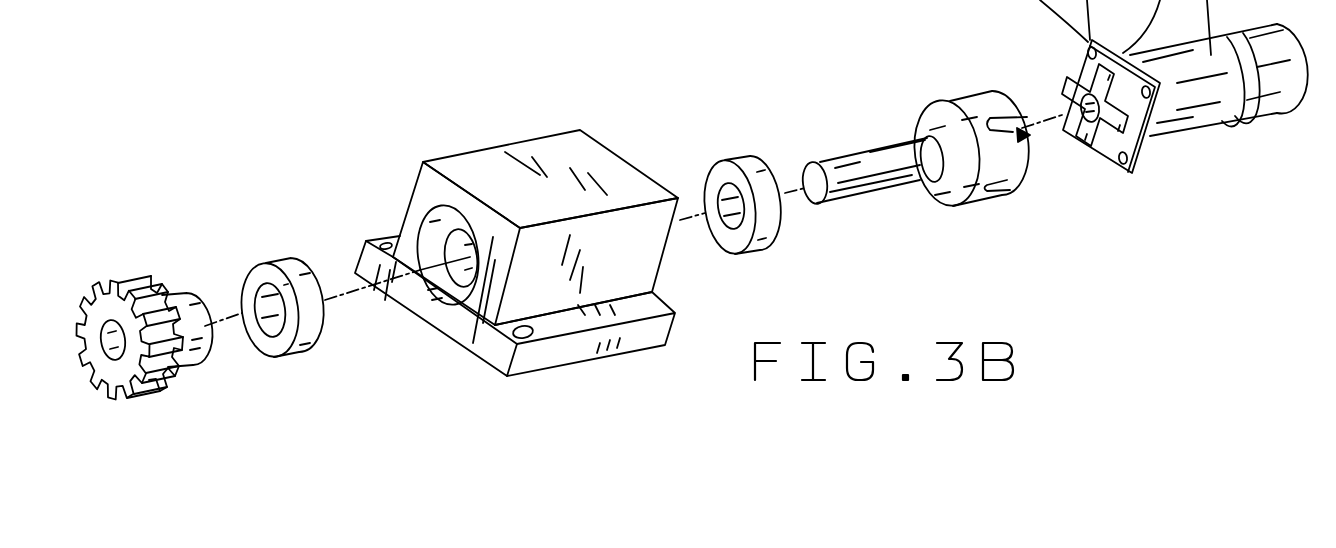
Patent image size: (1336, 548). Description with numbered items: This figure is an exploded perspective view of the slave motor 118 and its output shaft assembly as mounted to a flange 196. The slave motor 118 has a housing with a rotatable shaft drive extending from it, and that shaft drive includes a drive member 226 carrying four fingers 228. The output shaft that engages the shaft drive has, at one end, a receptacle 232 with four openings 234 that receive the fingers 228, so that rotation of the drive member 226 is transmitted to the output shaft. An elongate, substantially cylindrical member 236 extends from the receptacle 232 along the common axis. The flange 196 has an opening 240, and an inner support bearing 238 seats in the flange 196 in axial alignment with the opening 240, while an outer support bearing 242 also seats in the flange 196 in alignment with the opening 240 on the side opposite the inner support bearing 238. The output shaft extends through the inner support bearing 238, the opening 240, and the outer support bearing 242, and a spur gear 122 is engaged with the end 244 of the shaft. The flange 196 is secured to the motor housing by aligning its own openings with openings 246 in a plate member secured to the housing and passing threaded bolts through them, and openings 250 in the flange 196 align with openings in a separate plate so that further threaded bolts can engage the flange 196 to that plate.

The slave motor 118 is at (1270, 82).
The spur gear 122 is at (150, 386).
The flange 196 is at (633, 335).
The drive member 226 is at (1095, 164).
The fingers 228 is at (1050, 88).
The receptacle 232 is at (971, 201).
The openings 234 is at (1012, 193).
The elongate, substantially cylindrical member 236 is at (885, 192).
The inner support bearing 238 is at (770, 222).
The opening 240 is at (451, 242).
The outer support bearing 242 is at (300, 337).
The end 244 is at (862, 143).
The openings 246 is at (1135, 165).
The openings 250 is at (535, 329).